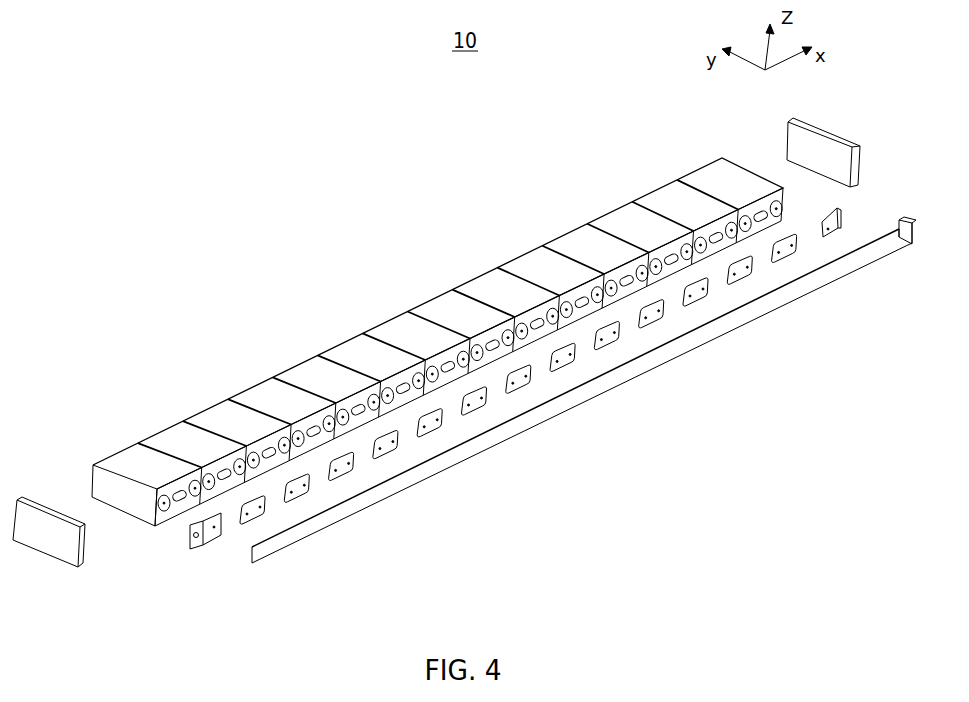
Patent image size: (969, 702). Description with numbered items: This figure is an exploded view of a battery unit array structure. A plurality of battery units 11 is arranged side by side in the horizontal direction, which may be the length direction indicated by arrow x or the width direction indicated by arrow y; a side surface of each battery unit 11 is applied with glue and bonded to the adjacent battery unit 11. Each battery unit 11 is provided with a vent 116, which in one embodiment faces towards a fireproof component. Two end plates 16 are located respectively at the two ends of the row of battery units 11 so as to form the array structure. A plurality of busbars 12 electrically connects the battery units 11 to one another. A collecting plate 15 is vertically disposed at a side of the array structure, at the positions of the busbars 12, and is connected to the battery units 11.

The battery unit 11 is at (127, 457).
The vent 116 is at (221, 474).
The busbar 12 is at (209, 543).
The collecting plate 15 is at (604, 385).
The end plate 16 is at (48, 527).